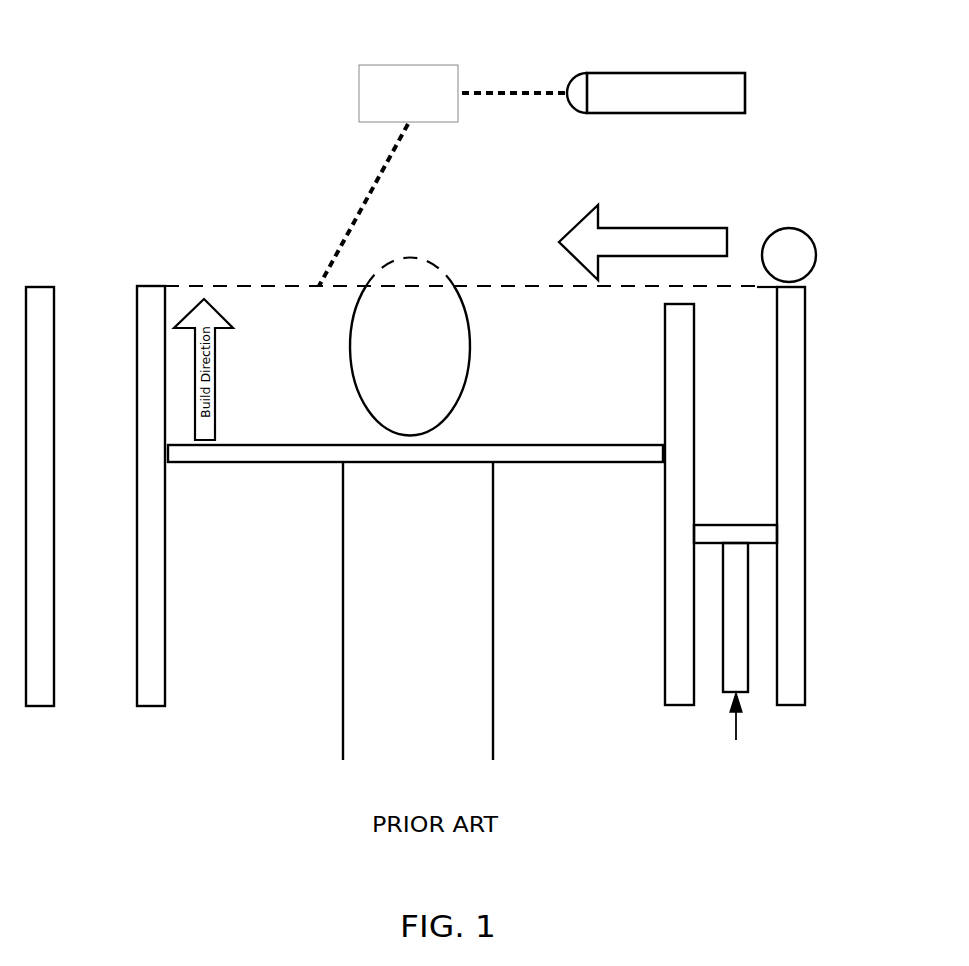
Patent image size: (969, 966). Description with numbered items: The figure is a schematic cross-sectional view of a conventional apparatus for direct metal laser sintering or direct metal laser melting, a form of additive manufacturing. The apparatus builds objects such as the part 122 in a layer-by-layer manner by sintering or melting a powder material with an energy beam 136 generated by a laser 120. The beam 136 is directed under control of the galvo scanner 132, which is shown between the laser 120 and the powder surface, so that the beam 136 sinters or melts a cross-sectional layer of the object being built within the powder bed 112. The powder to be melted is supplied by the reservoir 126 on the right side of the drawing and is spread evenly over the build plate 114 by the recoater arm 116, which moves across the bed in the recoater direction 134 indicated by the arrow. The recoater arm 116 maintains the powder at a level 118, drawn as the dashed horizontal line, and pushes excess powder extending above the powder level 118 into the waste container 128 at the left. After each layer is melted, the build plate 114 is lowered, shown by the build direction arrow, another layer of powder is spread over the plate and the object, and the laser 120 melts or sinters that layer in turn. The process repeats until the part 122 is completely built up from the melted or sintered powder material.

The powder bed 112 is at (555, 343).
The build plate 114 is at (612, 445).
The recoater arm 116 is at (786, 229).
The powder level 118 is at (228, 284).
The laser 120 is at (612, 72).
The part 122 is at (350, 348).
The reservoir 126 is at (742, 382).
The waste container 128 is at (120, 605).
The galvo scanner 132 is at (409, 63).
The recoater direction 134 is at (578, 224).
The energy beam 136 is at (363, 203).